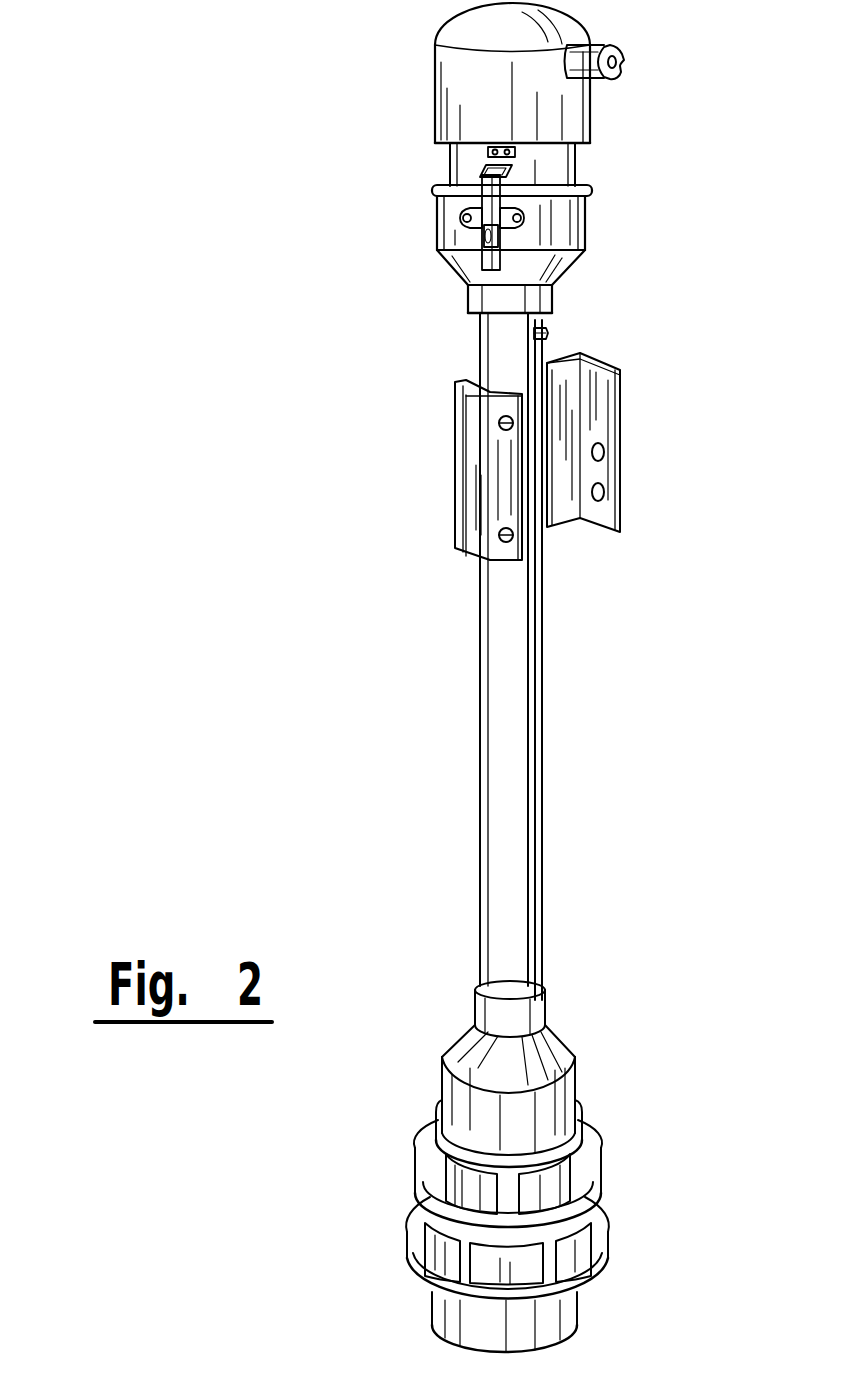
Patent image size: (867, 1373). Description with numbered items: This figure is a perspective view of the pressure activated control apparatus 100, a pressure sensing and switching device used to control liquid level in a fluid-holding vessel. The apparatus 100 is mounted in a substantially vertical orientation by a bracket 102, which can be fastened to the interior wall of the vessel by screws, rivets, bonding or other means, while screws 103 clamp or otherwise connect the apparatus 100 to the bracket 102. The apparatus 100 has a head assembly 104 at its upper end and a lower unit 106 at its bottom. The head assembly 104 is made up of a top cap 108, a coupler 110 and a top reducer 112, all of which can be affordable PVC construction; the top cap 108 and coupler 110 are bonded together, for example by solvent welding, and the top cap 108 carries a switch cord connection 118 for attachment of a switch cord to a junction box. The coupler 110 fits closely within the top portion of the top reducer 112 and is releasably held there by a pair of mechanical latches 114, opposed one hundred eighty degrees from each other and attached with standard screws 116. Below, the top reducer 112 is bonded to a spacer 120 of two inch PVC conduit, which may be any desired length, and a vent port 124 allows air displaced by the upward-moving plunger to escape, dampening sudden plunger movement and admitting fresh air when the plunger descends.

The pressure activated control apparatus 100 is at (610, 676).
The bracket 102 is at (621, 385).
The screws 103 is at (503, 425).
The head assembly 104 is at (294, 191).
The lower unit 106 is at (292, 1188).
The top cap 108 is at (590, 110).
The coupler 110 is at (578, 165).
The top reducer 112 is at (590, 198).
The latches 114 is at (472, 203).
The screws 116 is at (488, 152).
The switch cord connection 118 is at (612, 77).
The spacer 120 is at (543, 588).
The vent port 124 is at (551, 337).